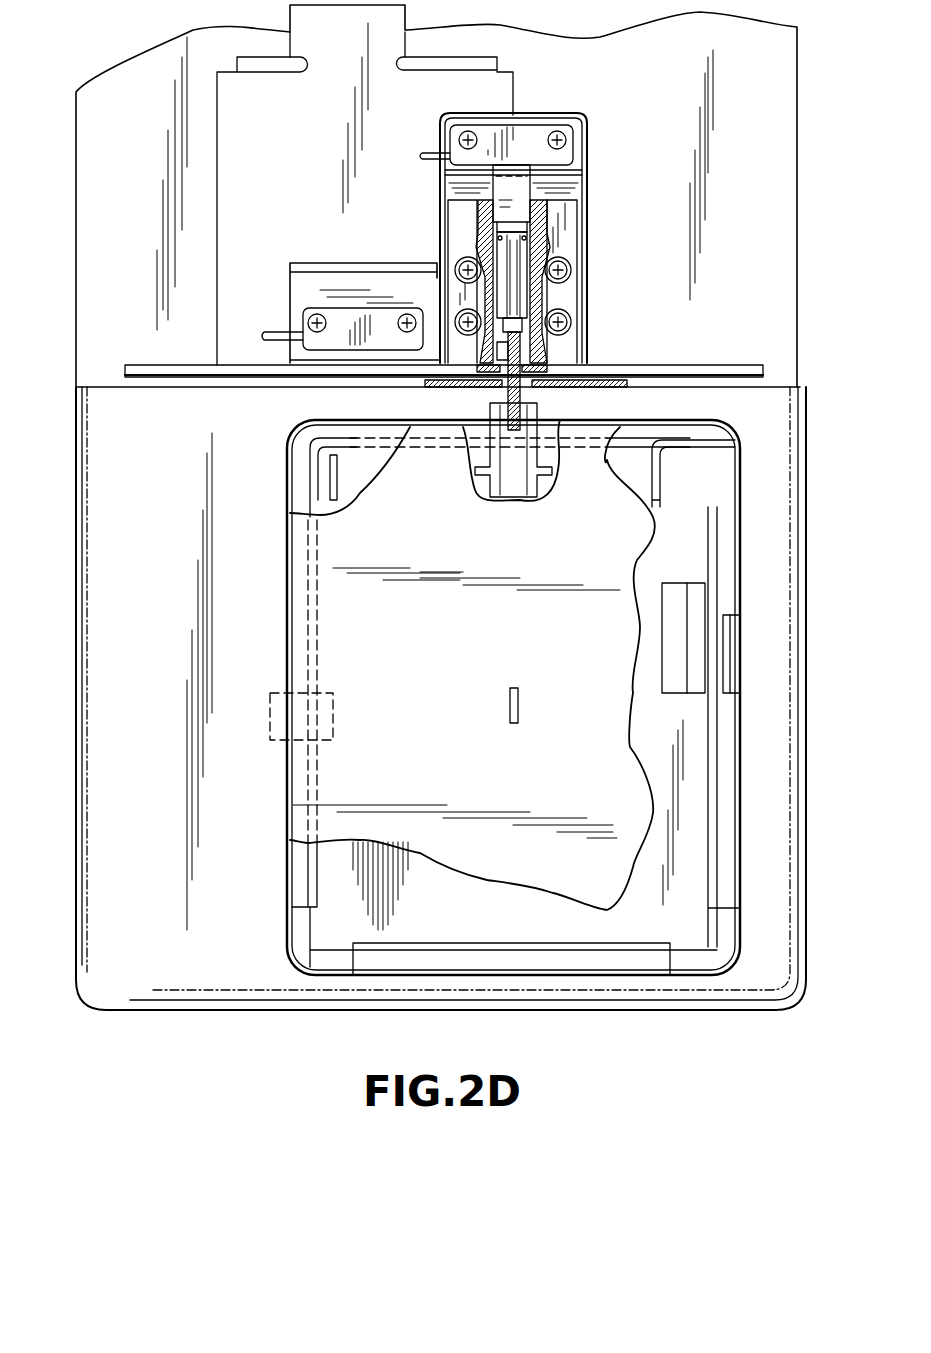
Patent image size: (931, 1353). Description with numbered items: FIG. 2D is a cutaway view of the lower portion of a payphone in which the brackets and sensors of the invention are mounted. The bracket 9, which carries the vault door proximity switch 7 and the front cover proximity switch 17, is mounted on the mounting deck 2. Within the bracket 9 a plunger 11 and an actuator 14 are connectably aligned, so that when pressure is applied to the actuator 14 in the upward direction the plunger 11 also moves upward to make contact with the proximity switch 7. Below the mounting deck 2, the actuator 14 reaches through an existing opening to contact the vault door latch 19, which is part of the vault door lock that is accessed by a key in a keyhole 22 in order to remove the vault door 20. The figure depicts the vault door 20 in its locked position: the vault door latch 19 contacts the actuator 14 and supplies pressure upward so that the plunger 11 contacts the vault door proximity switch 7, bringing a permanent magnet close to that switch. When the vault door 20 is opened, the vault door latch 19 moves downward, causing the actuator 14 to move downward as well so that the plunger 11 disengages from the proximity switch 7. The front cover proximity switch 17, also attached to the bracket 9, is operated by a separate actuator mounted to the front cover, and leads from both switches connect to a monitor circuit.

The mounting deck 2 is at (685, 363).
The vault door proximity switch 7 is at (537, 132).
The bracket 9 is at (578, 165).
The plunger 11 is at (500, 183).
The actuator 14 is at (513, 352).
The front cover proximity switch 17 is at (378, 320).
The vault door latch 19 is at (500, 420).
The vault door 20 is at (340, 625).
The keyhole 22 is at (510, 705).